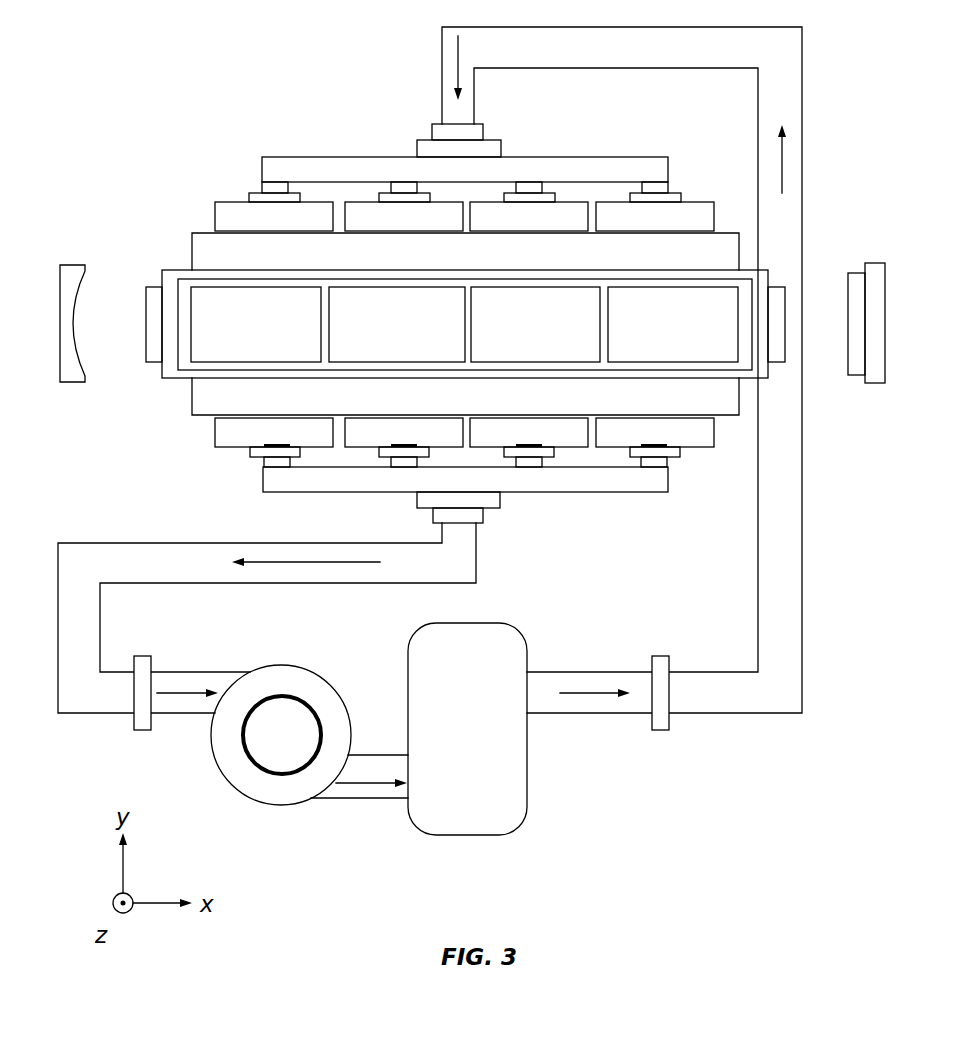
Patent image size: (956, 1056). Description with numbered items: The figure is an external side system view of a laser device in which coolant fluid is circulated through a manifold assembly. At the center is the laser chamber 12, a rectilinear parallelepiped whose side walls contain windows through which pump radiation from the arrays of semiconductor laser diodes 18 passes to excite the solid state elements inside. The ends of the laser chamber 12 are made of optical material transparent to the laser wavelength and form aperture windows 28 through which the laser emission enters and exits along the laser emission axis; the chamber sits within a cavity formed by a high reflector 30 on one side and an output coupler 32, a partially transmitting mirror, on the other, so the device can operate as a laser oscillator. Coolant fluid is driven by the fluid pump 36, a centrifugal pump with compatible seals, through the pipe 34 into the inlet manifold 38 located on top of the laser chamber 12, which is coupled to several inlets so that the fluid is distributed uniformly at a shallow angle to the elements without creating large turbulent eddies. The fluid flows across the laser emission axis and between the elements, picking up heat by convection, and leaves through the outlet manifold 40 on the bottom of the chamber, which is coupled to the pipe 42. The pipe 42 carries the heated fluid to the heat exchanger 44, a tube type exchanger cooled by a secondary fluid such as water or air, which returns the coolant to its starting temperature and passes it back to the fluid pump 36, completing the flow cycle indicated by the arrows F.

The laser chamber 12 is at (180, 262).
The semiconductor laser diodes 18 is at (220, 352).
The aperture windows 28 is at (150, 323).
The high reflector 30 is at (75, 370).
The output coupler 32 is at (873, 262).
The pipe 34 is at (613, 28).
The fluid pump 36 is at (278, 806).
The inlet manifold 38 is at (577, 155).
The outlet manifold 40 is at (624, 486).
The pipe 42 is at (92, 630).
The heat exchanger 44 is at (515, 795).